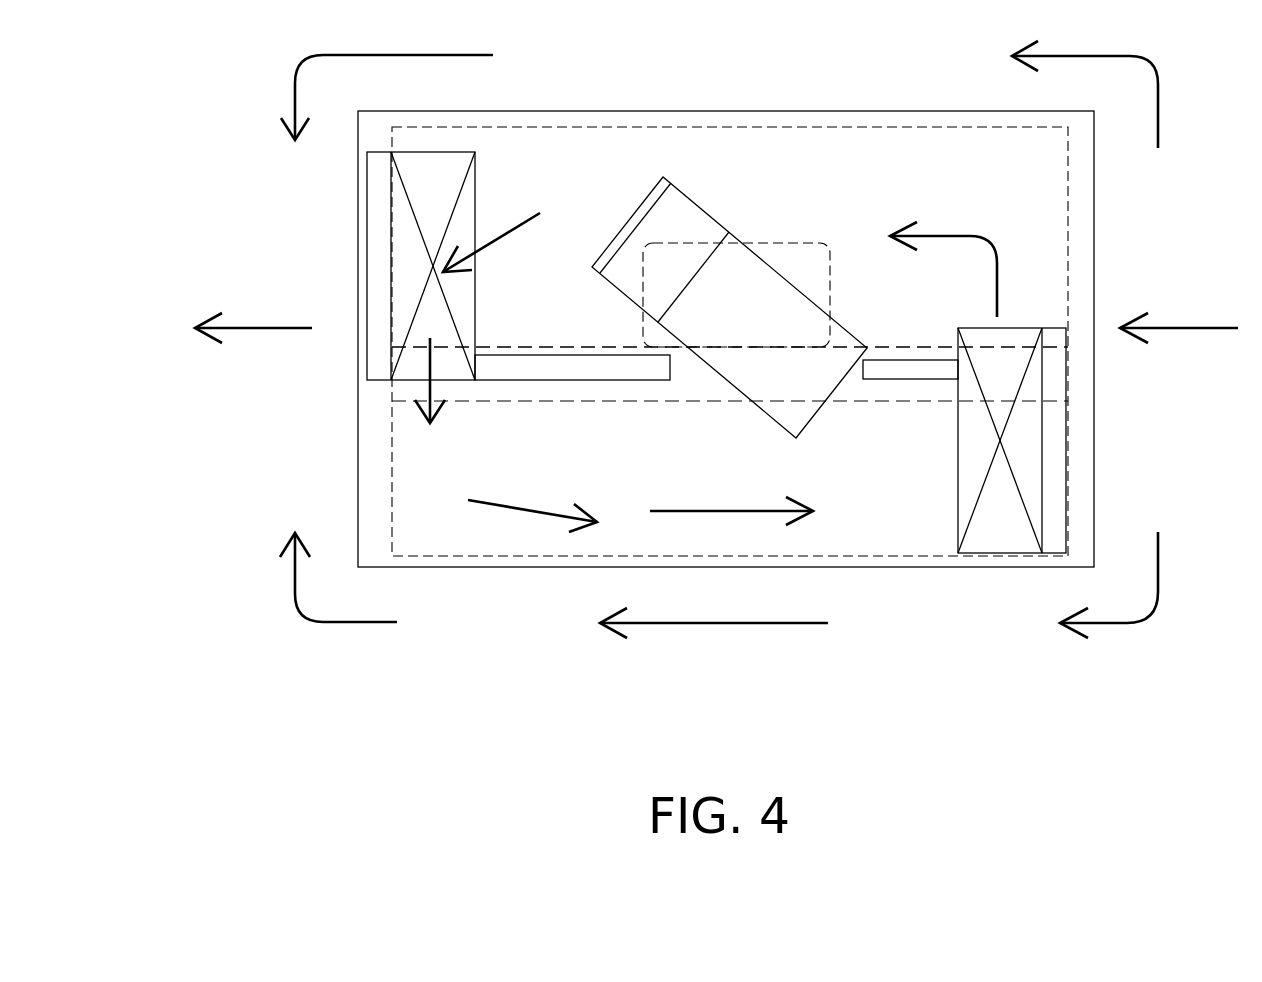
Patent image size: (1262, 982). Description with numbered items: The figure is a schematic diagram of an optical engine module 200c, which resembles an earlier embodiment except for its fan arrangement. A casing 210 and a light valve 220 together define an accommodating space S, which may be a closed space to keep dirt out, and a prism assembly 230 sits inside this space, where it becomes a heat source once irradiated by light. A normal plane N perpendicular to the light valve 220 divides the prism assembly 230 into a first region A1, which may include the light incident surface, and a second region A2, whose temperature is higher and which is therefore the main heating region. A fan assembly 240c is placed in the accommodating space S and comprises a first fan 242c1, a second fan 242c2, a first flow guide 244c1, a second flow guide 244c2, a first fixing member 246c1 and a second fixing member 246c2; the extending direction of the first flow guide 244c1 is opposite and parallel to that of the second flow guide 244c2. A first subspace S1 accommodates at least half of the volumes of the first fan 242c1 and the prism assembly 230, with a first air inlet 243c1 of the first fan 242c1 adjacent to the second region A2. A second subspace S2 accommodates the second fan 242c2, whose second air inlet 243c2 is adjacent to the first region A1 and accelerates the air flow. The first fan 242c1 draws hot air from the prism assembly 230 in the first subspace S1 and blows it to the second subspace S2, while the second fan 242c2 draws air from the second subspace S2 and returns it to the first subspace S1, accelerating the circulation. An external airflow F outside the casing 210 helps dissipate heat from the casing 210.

The optical engine module 200c is at (1232, 684).
The casing 210 is at (1096, 229).
The light valve 220 is at (835, 262).
The prism assembly 230 is at (777, 293).
The fan assembly 240c is at (222, 355).
The first fan 242c1 is at (372, 347).
The second fan 242c2 is at (990, 541).
The first air inlet 243c1 is at (487, 368).
The second air inlet 243c2 is at (958, 513).
The first flow guide 244c1 is at (528, 380).
The second flow guide 244c2 is at (876, 372).
The first fixing member 246c1 is at (377, 364).
The second fixing member 246c2 is at (1052, 543).
The accommodating space S is at (925, 162).
The first subspace S1 is at (1070, 279).
The second subspace S2 is at (1070, 445).
The external airflow F is at (1195, 327).
The normal plane N is at (708, 266).
The first region A1 is at (776, 378).
The second region A2 is at (678, 224).